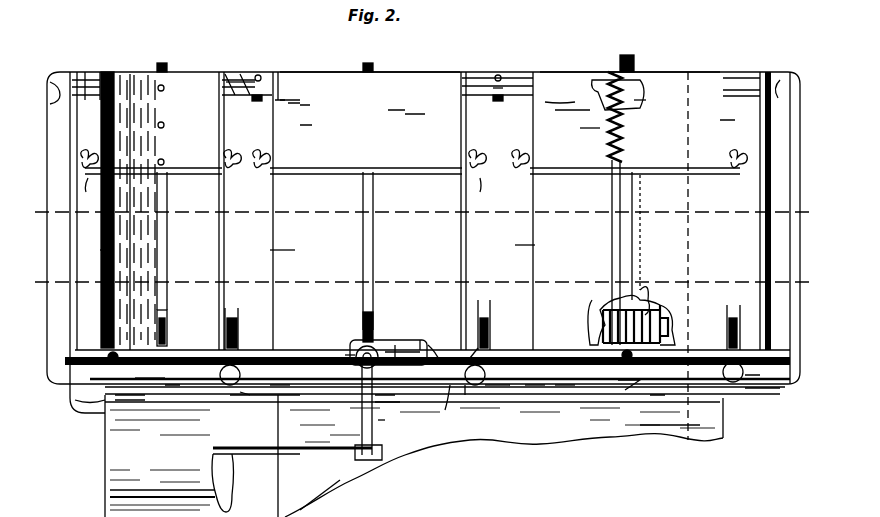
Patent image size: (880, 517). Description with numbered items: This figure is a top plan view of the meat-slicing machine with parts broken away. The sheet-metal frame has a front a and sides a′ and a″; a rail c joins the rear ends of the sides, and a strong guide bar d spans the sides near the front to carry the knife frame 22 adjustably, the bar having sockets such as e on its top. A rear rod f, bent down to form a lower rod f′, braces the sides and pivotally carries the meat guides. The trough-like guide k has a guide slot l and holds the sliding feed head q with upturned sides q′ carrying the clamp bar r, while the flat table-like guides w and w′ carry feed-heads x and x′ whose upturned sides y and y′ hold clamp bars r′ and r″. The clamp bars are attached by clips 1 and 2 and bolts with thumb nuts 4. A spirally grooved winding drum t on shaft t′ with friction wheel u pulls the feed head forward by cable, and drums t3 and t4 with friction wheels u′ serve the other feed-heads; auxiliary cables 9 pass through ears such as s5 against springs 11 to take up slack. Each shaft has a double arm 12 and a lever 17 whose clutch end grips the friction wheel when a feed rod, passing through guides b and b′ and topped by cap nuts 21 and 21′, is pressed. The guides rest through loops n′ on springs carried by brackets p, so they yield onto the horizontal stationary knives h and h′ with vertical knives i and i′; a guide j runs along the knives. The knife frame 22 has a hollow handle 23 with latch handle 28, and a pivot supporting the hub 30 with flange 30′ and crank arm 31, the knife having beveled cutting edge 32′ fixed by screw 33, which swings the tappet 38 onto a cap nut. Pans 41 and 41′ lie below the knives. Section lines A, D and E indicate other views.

The side a′ is at (70, 95).
The upturned side q′ is at (100, 80).
The feed head q is at (125, 88).
The rail c is at (240, 80).
The feed-head x is at (318, 80).
The rod f is at (480, 80).
The feed-head x′ is at (563, 80).
The low rod f′ is at (238, 102).
The clip 1 is at (88, 155).
The clip 2 is at (235, 160).
The clamp bar r is at (180, 168).
The clamp bar r′ is at (330, 166).
The upturned side y is at (533, 128).
The upturned side y′ is at (460, 122).
The ear s5 is at (560, 95).
The spring 11 is at (598, 124).
The thumb nut 4 is at (284, 193).
The section line A is at (419, 213).
The section line D is at (420, 283).
The trough-like guide k is at (104, 250).
The guide slot l is at (157, 275).
The meat guide and support w is at (272, 250).
The meat guide and support w′ is at (520, 244).
The winding drum t is at (167, 312).
The friction wheel u is at (230, 308).
The shaft t′ is at (240, 318).
The socket e is at (96, 352).
The front a is at (192, 356).
The guide b is at (255, 395).
The guide bar d is at (328, 340).
The hollow handle 23 is at (356, 350).
The winding drum t3 is at (375, 318).
The tappet 38 is at (448, 345).
The latch handle 28 is at (396, 345).
The knife frame 22 is at (424, 345).
The friction wheel u′ is at (482, 300).
The double arm 12 is at (488, 325).
The lever 17 is at (490, 345).
The winding drum t4 is at (648, 280).
The loop n′ is at (108, 405).
The cable 9 is at (150, 398).
The bracket p is at (160, 382).
The guide j is at (178, 388).
The cap nut 21 is at (215, 388).
The beveled cutting edge 32′ is at (246, 398).
The vertical knife i is at (270, 398).
The screw 33 is at (350, 410).
The crank arm 31 is at (256, 455).
The pan 41 is at (118, 488).
The pan 41′ is at (340, 485).
The section line E is at (368, 460).
The flange 30′ is at (385, 405).
The hub 30 is at (385, 430).
The horizontal stationary knife h is at (452, 395).
The cap nut 21′ is at (470, 398).
The guide b′ is at (488, 398).
The vertical knife i′ is at (535, 400).
The horizontal stationary knife h′ is at (580, 400).